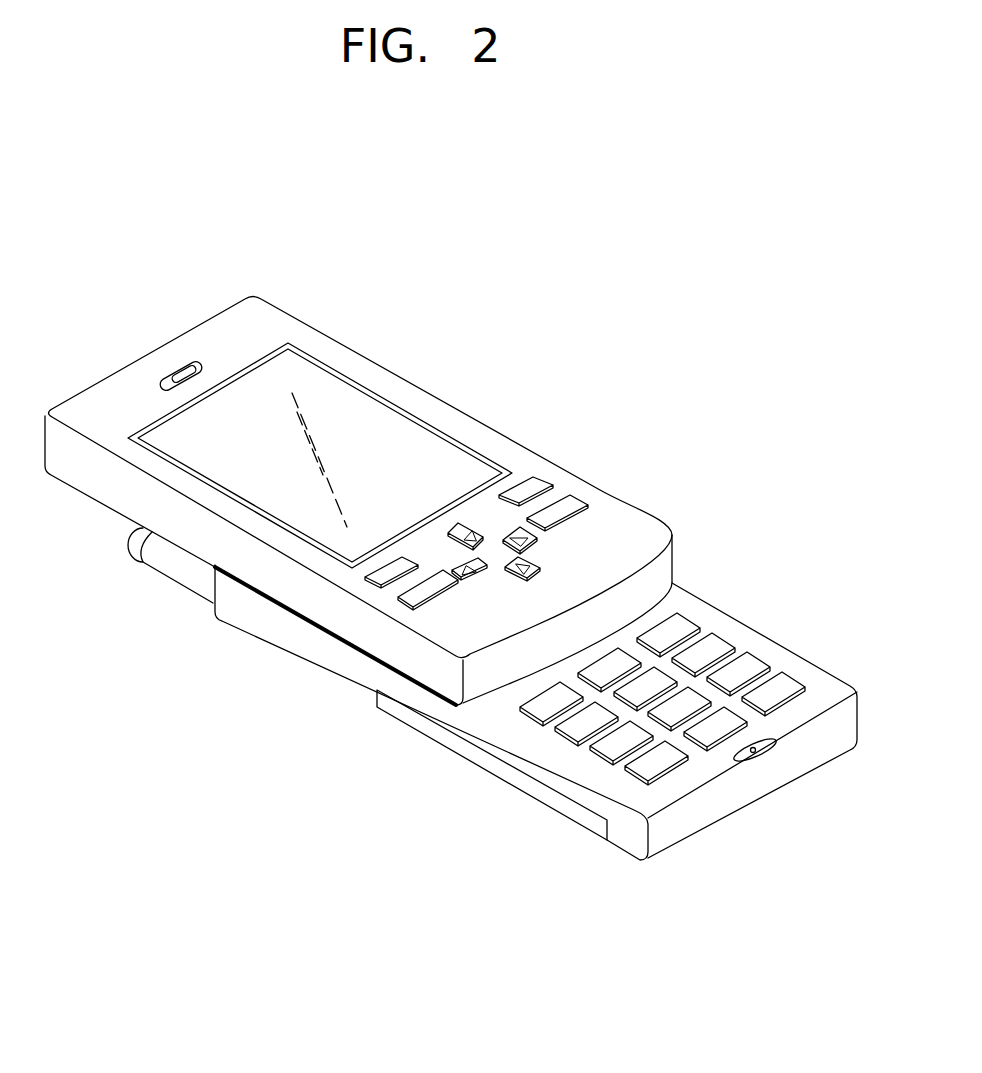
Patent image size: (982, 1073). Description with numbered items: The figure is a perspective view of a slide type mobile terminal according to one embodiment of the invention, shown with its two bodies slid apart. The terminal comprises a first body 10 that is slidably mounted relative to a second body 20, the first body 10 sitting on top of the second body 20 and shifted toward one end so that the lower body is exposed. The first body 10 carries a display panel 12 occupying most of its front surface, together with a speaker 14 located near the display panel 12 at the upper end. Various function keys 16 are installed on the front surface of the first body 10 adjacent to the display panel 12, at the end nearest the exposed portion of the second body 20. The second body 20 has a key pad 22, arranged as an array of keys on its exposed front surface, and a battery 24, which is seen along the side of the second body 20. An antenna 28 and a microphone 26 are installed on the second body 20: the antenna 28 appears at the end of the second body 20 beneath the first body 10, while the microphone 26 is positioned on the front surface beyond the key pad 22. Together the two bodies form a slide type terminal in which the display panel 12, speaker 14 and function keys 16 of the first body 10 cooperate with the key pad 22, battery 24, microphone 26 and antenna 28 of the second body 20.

The first body 10 is at (335, 290).
The display panel 12 is at (395, 432).
The speaker 14 is at (178, 372).
The function keys 16 is at (560, 510).
The second body 20 is at (513, 810).
The key pad 22 is at (750, 663).
The battery 24 is at (420, 730).
The microphone 26 is at (767, 745).
The antenna 28 is at (175, 559).